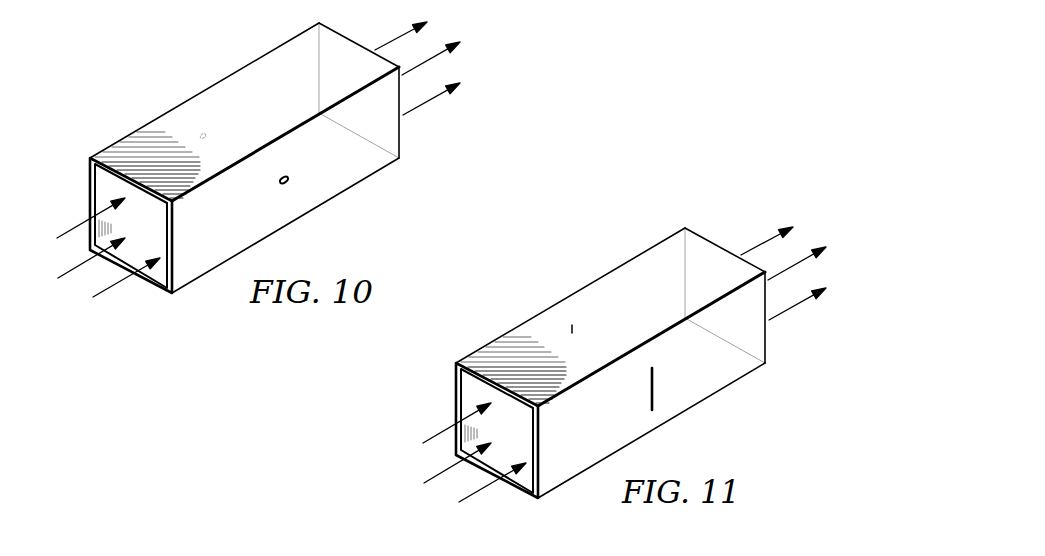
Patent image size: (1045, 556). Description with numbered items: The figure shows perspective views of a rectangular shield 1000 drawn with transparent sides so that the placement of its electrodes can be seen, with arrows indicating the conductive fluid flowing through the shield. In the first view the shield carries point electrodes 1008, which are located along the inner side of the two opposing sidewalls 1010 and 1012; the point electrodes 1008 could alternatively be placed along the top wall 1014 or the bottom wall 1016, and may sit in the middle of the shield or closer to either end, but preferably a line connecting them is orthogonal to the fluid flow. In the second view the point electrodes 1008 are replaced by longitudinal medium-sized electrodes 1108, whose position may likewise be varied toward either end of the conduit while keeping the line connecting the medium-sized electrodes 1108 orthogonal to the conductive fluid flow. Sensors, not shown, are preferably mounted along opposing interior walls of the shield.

In FIG. 10, the rectangular shield 1000 is at (240, 180).
In FIG. 10, the point electrodes 1008 is at (205, 137).
In FIG. 10, the sidewall 1010 is at (277, 220).
In FIG. 10, the sidewall 1012 is at (100, 180).
In FIG. 10, the top wall 1014 is at (248, 71).
In FIG. 10, the bottom wall 1016 is at (150, 287).
In FIG. 11, the medium-sized electrodes 1108 is at (574, 343).